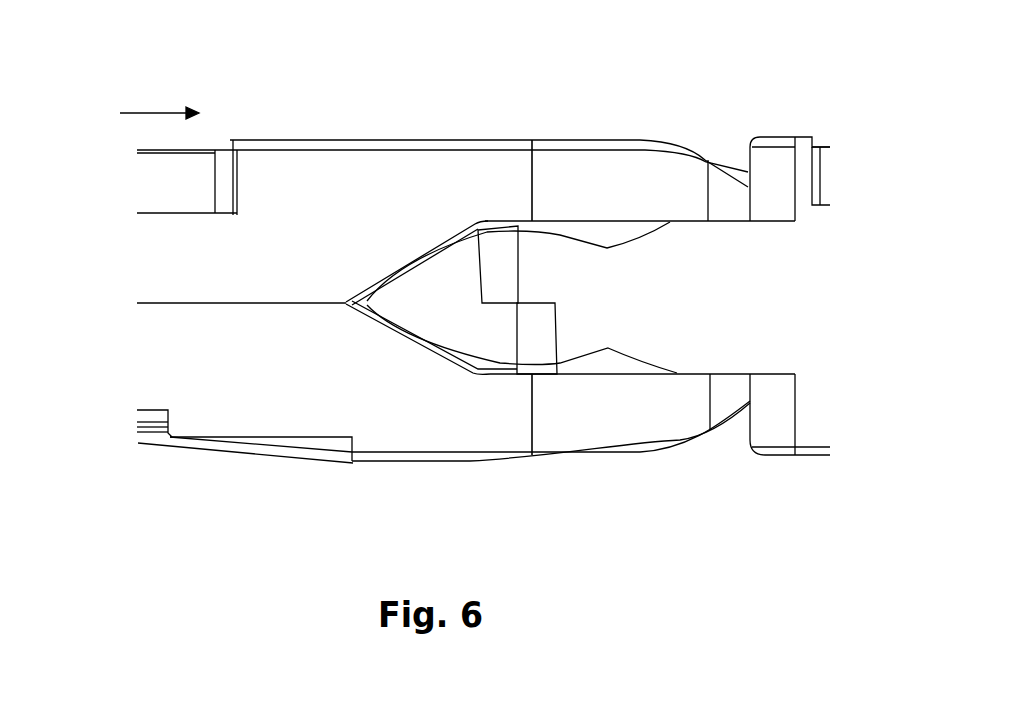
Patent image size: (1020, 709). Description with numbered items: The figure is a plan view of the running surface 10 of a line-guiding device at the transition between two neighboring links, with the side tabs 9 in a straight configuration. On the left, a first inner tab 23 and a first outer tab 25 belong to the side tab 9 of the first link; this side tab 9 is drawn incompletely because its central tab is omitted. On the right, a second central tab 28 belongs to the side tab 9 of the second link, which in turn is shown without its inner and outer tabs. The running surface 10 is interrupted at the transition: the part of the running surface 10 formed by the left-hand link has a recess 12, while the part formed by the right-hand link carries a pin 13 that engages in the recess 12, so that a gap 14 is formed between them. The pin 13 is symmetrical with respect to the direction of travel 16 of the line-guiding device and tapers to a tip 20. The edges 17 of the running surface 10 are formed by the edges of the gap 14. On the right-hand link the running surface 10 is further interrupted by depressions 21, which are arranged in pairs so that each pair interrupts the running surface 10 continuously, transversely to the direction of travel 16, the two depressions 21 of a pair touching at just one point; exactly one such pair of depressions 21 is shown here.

The side tab 9 is at (277, 540).
The running surface 10 is at (398, 177).
The recess 12 is at (410, 348).
The pin 13 is at (473, 335).
The gap 14 is at (438, 350).
The direction of travel 16 is at (162, 113).
The edges of the running surface 17 is at (535, 233).
The tip 20 is at (357, 287).
The depressions 21 is at (503, 245).
The first inner tab 23 is at (212, 417).
The first outer tab 25 is at (273, 272).
The second central tab 28 is at (817, 423).